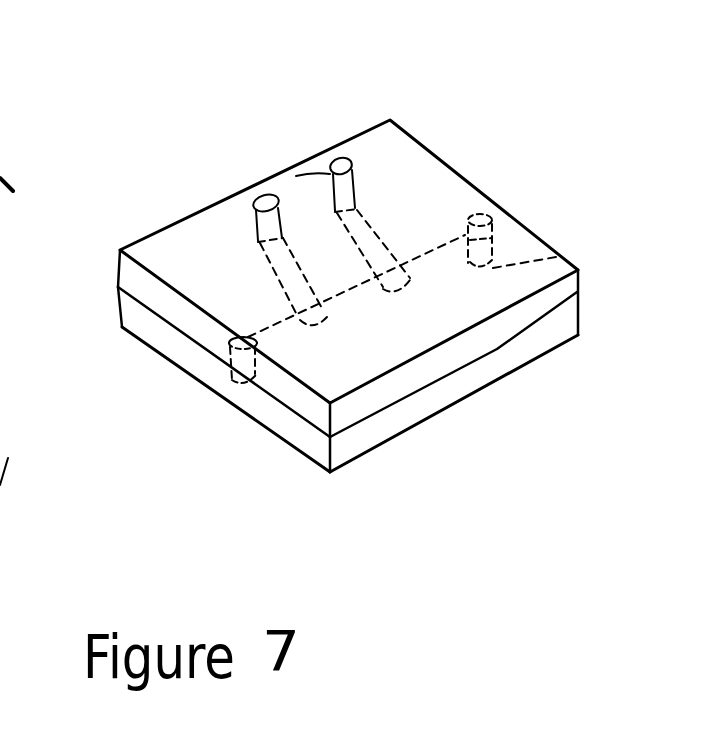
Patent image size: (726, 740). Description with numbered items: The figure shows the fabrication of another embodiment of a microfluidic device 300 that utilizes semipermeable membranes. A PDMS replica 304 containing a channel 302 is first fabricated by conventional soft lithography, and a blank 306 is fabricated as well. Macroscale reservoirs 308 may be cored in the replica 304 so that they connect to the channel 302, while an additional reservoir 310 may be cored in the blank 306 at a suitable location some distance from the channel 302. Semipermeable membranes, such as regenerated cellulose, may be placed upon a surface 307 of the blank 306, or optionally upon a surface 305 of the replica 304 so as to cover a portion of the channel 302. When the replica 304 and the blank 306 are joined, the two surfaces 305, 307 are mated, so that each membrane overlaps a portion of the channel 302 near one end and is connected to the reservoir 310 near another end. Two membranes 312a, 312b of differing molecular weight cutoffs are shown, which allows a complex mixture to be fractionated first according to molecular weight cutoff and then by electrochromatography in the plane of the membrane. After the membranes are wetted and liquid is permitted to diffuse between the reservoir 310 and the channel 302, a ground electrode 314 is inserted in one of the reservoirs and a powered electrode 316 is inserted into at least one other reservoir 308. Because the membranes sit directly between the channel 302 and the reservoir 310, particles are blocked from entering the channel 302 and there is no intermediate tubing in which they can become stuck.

The microfluidic device 300 is at (497, 153).
The channel 302 is at (389, 325).
The PDMS replica 304 is at (460, 403).
The surface of the replica 305 is at (412, 362).
The surface of the blank 307 is at (497, 348).
The blank 306 is at (540, 256).
The macroscale reservoirs 308 is at (493, 243).
The reservoir 310 is at (283, 200).
The semi-permeable membrane 312a is at (276, 265).
The semi-permeable membrane 312b is at (377, 225).
The ground electrode 314 is at (342, 157).
The powered electrode 316 is at (563, 258).